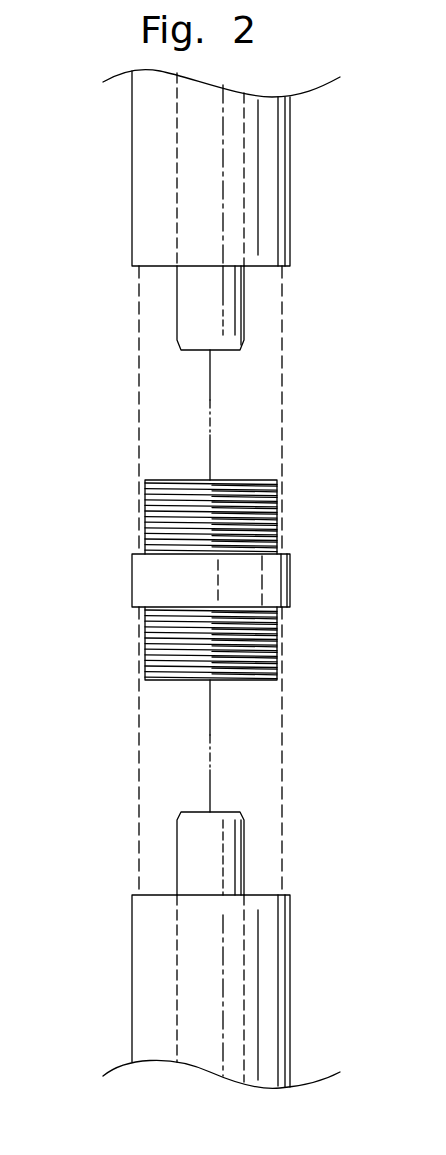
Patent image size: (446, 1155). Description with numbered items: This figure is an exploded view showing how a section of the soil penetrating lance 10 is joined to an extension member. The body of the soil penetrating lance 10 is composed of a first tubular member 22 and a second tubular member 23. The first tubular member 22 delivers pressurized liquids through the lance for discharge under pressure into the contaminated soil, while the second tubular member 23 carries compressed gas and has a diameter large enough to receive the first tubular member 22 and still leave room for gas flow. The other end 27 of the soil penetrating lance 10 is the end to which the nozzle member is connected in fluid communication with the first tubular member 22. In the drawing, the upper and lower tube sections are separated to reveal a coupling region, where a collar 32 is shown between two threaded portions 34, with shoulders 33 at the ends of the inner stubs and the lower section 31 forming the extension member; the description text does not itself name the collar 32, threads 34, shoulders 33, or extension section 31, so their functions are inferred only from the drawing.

The soil penetrating lance 10 is at (295, 236).
The first tubular member 22 is at (132, 200).
The second tubular member 23 is at (243, 326).
The other end 27 is at (290, 121).
The second pipe section 31 is at (178, 847).
The collar 32 is at (294, 584).
The shoulder 33 is at (146, 267).
The threads 34 is at (283, 503).